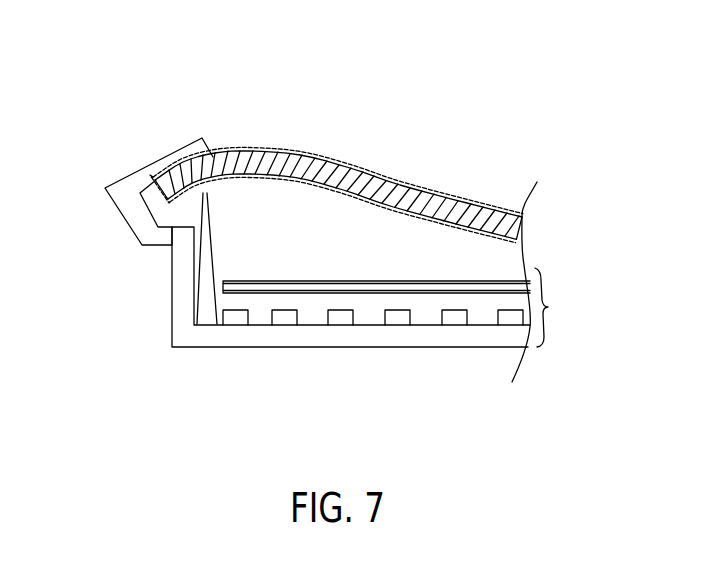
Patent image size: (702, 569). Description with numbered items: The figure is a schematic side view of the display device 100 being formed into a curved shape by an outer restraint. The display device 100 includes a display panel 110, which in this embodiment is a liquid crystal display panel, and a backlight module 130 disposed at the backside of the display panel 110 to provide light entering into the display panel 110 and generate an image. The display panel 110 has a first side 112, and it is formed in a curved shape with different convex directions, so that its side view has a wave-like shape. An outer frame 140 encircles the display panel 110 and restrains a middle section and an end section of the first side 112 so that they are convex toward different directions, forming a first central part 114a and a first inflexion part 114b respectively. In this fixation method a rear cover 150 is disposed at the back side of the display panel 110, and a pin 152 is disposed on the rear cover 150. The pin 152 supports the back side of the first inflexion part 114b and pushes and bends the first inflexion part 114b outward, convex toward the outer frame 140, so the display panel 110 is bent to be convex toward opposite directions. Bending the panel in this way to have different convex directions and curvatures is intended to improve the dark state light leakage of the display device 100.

The display device 100 is at (78, 55).
The display panel 110 is at (415, 198).
The first side 112 is at (294, 154).
The first central part 114a is at (463, 200).
The first inflexion part 114b is at (215, 155).
The backlight module 130 is at (406, 307).
The outer frame 140 is at (162, 170).
The rear cover 150 is at (182, 283).
The pin 152 is at (210, 312).